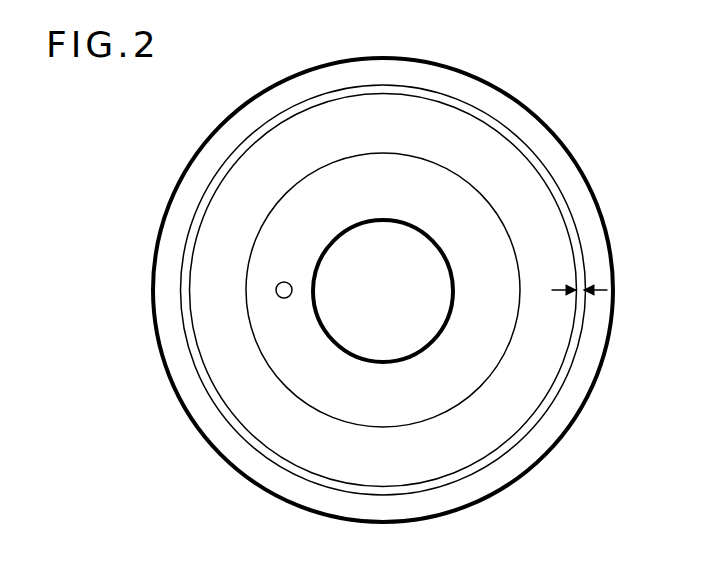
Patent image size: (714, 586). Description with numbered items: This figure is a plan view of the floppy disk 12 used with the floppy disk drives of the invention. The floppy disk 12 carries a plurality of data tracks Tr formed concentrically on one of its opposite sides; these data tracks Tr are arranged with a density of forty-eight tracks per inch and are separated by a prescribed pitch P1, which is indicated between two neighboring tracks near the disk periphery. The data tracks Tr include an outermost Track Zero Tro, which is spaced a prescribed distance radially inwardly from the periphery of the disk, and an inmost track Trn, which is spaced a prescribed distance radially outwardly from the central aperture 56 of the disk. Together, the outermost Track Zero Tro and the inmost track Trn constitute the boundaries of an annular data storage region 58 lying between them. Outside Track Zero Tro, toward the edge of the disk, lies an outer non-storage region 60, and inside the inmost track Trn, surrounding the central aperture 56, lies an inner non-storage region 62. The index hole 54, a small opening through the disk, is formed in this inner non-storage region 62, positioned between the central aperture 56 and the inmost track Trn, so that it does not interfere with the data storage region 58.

The floppy disk 12 is at (402, 312).
The index hole 54 is at (284, 298).
The central aperture 56 is at (410, 226).
The annular data storage region 58 is at (400, 468).
The outer non-storage region 60 is at (440, 507).
The inner non-storage region 62 is at (397, 401).
The data tracks Tr is at (413, 290).
The inmost track Trn is at (487, 378).
The outermost Track Zero Tro is at (558, 397).
The pitch P1 is at (580, 290).